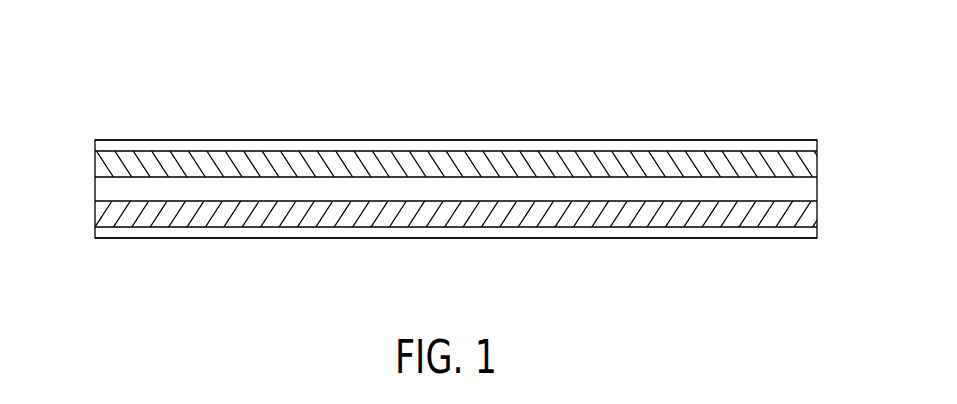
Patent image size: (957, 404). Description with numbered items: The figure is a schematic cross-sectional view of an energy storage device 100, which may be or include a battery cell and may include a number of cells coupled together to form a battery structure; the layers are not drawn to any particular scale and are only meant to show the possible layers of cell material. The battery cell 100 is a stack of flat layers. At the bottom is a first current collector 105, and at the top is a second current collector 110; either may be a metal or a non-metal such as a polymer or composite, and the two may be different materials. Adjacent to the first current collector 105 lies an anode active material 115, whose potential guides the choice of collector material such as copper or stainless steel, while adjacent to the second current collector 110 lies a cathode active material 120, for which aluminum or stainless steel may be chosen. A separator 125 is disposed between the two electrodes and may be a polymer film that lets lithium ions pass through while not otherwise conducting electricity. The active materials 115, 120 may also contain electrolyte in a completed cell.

The energy storage device 100 is at (164, 78).
The first current collector 105 is at (293, 238).
The second current collector 110 is at (671, 146).
The anode active material 115 is at (102, 212).
The cathode active material 120 is at (808, 160).
The separator 125 is at (810, 190).